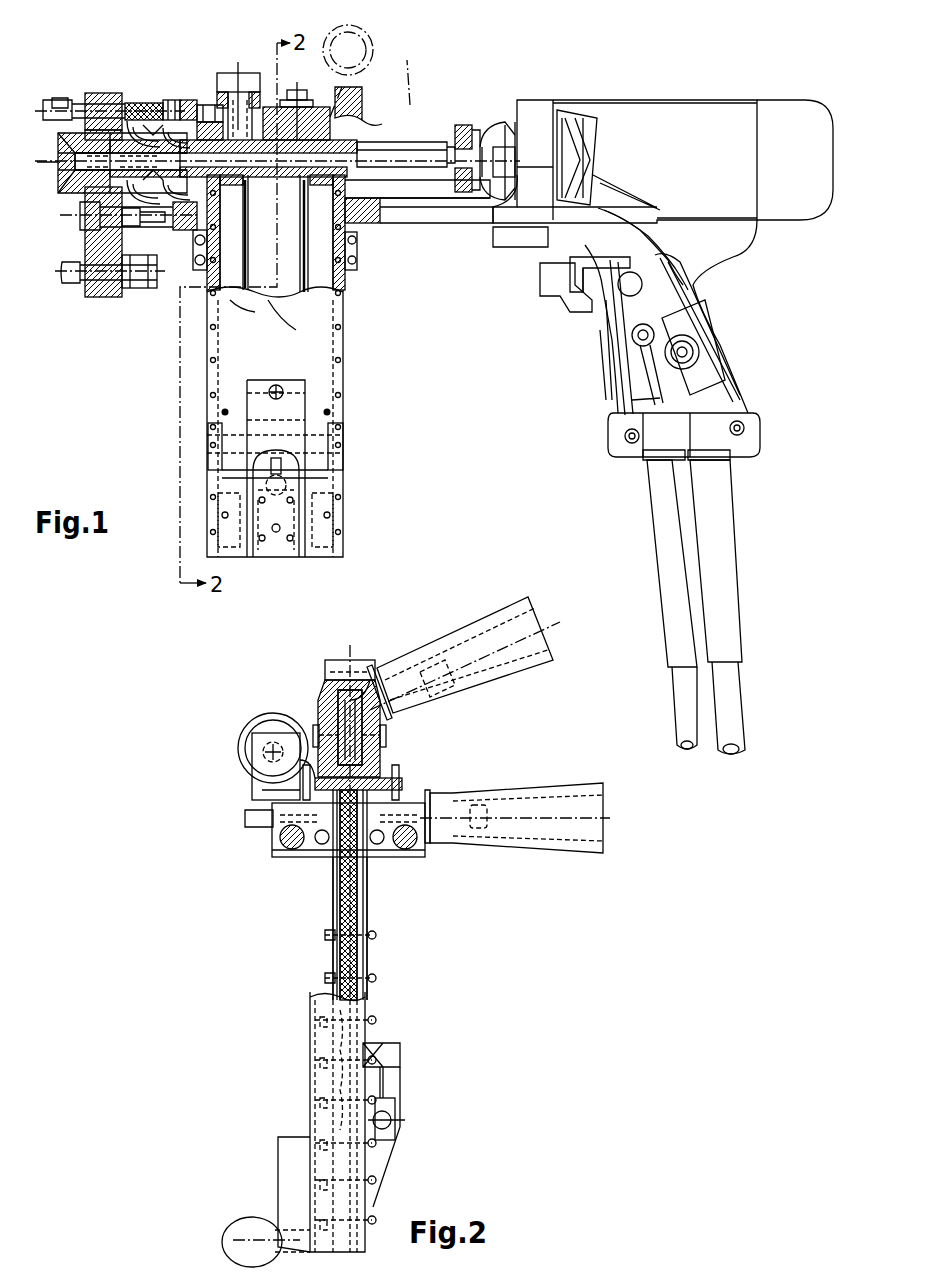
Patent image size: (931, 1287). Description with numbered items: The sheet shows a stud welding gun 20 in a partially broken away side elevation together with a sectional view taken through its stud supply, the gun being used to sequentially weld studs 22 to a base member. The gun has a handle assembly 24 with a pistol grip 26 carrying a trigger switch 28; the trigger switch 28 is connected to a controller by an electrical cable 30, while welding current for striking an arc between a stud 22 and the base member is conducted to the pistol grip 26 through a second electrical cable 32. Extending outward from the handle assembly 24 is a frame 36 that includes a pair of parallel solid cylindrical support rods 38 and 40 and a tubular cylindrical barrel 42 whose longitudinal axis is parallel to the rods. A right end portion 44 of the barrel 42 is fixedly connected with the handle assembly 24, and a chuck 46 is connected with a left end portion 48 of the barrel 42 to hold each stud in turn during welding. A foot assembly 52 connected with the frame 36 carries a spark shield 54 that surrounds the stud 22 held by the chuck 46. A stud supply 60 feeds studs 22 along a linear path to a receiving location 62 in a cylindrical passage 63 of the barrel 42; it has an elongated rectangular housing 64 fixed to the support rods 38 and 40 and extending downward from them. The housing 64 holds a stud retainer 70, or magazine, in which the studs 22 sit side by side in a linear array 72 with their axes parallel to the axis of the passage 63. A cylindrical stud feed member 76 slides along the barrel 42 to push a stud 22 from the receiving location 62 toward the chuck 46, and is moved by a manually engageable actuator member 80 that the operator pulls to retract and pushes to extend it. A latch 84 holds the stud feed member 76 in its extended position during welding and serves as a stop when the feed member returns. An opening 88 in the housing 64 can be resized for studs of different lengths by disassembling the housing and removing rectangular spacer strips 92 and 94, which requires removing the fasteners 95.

In FIG. 1, the stud welding gun 20 is at (716, 66).
In FIG. 1, the stud 22 is at (58, 170).
In FIG. 2, the stud 22 is at (333, 958).
In FIG. 1, the handle assembly 24 is at (822, 98).
In FIG. 1, the pistol grip 26 is at (727, 338).
In FIG. 1, the trigger switch 28 is at (549, 283).
In FIG. 1, the electrical cable 30 is at (673, 582).
In FIG. 1, the second electrical cable 32 is at (723, 511).
In FIG. 1, the frame 36 is at (459, 122).
In FIG. 2, the support rod 38 is at (282, 857).
In FIG. 1, the support rod 40 is at (411, 210).
In FIG. 2, the support rod 40 is at (423, 855).
In FIG. 1, the tubular cylindrical barrel 42 is at (421, 131).
In FIG. 1, the right end portion 44 is at (479, 120).
In FIG. 1, the chuck 46 is at (100, 94).
In FIG. 1, the left end portion 48 is at (142, 102).
In FIG. 1, the foot assembly 52 is at (97, 298).
In FIG. 1, the spark shield 54 is at (62, 148).
In FIG. 1, the stud supply 60 is at (205, 494).
In FIG. 2, the stud supply 60 is at (293, 1135).
In FIG. 1, the receiving location 62 is at (207, 250).
In FIG. 1, the cylindrical passage 63 is at (207, 195).
In FIG. 1, the housing 64 is at (203, 478).
In FIG. 2, the housing 64 is at (368, 960).
In FIG. 1, the stud retainer 70 is at (305, 297).
In FIG. 2, the stud retainer 70 is at (355, 950).
In FIG. 2, the linear array 72 is at (340, 960).
In FIG. 1, the stud feed member 76 is at (341, 142).
In FIG. 1, the actuator member 80 is at (380, 58).
In FIG. 2, the actuator member 80 is at (505, 600).
In FIG. 1, the latch 84 is at (250, 66).
In FIG. 1, the opening 88 is at (300, 313).
In FIG. 1, the spacer strip 92 is at (217, 287).
In FIG. 1, the spacer strip 94 is at (350, 238).
In FIG. 1, the fasteners 95 is at (223, 412).